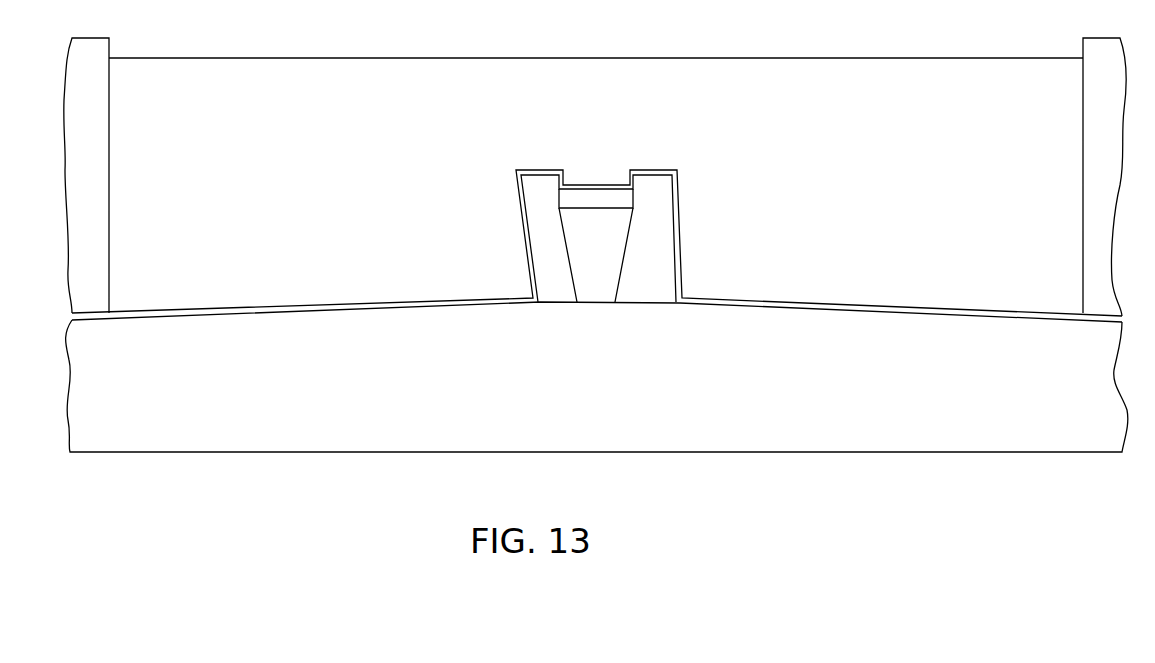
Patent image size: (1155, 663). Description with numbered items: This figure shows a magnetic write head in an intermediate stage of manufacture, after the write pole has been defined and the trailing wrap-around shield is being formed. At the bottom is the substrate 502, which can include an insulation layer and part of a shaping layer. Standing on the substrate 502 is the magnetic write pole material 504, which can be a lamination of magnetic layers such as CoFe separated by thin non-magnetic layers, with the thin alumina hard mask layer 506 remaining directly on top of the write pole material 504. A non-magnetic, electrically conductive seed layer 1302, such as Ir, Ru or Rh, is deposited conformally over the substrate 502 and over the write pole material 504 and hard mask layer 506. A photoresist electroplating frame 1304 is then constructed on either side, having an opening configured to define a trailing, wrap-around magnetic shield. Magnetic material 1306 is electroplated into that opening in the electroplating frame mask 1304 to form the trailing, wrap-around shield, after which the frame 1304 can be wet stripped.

The substrate 502 is at (600, 367).
The magnetic write pole material 504 is at (602, 260).
The alumina hard mask layer 506 is at (587, 197).
The seed layer 1302 is at (903, 312).
The photoresist electroplating frame 1304 is at (100, 133).
The magnetic material 1306 is at (647, 107).